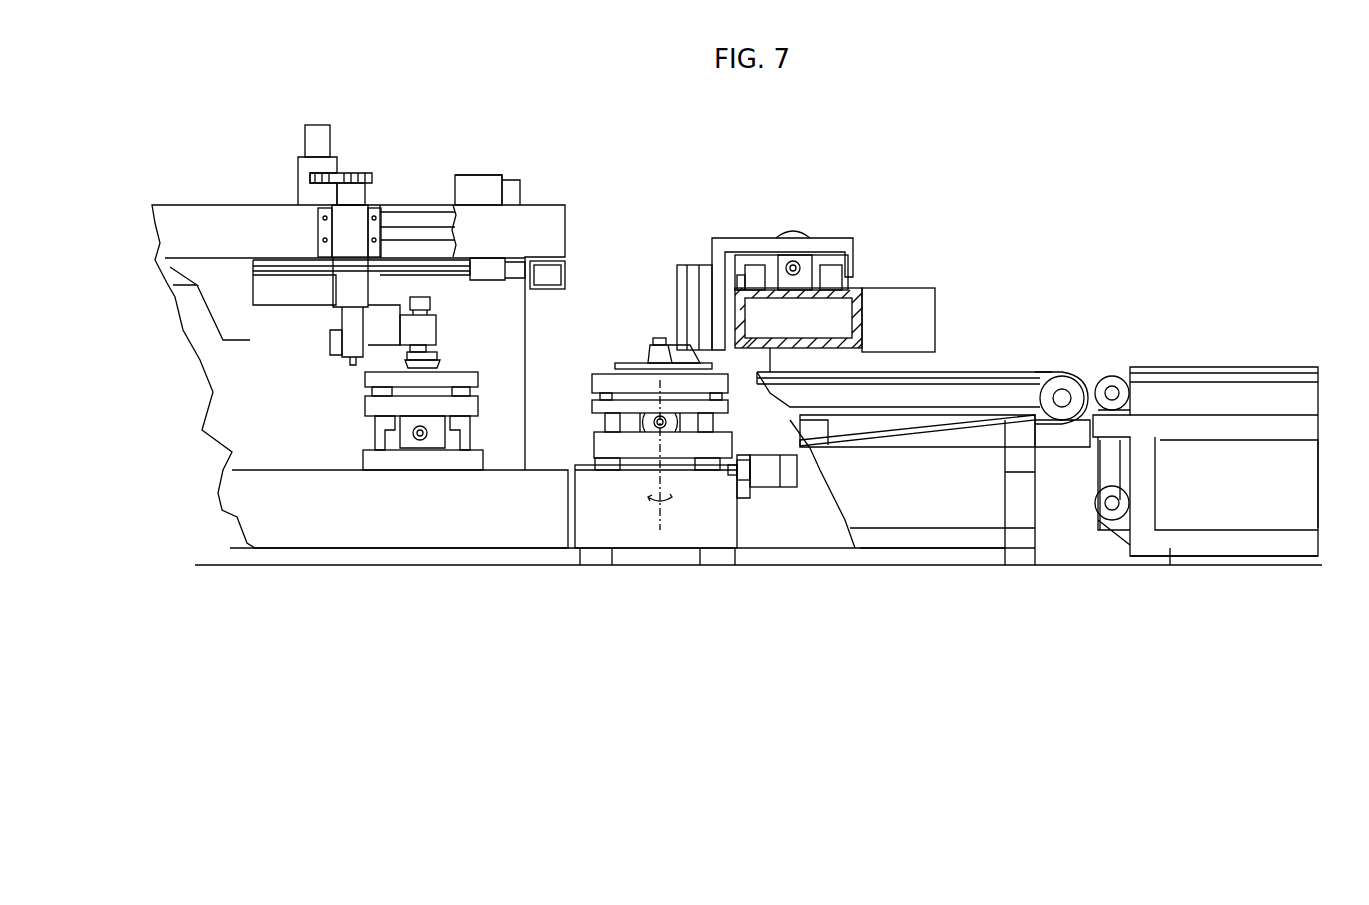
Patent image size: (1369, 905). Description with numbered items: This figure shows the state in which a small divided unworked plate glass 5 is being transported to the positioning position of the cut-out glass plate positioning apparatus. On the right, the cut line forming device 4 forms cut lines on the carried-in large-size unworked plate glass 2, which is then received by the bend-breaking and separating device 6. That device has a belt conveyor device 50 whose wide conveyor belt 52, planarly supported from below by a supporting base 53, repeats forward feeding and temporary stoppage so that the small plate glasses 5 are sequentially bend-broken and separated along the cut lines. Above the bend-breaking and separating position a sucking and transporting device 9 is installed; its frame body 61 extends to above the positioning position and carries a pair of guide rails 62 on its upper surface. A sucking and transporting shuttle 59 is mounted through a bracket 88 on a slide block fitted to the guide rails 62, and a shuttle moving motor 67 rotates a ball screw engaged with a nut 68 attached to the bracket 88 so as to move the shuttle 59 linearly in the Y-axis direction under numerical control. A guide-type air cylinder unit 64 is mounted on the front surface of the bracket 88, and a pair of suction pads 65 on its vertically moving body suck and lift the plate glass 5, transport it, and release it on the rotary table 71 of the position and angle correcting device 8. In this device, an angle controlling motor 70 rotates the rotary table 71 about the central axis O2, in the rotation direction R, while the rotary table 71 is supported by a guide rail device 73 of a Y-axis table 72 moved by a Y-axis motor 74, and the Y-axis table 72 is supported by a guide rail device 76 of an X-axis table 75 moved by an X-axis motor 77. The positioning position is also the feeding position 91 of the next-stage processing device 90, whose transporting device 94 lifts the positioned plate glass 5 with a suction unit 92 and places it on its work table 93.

The large-size unworked plate glass 2 is at (888, 372).
The cut line forming device 4 is at (1205, 364).
The small divided unworked plate glass 5 is at (630, 357).
The bend-breaking and separating device 6 is at (953, 383).
The position and angle correcting device 8 is at (650, 478).
The sucking and transporting device 9 is at (712, 235).
The belt conveyor device 50 is at (1010, 383).
The conveyor belt 52 is at (950, 430).
The supporting base 53 is at (897, 425).
The sucking and transporting shuttle 59 is at (700, 275).
The frame body 61 is at (813, 303).
The guide rail 62 is at (752, 273).
The guide-type air cylinder unit 64 is at (693, 330).
The suction pad 65 is at (655, 350).
The shuttle moving motor 67 is at (792, 230).
The nut 68 is at (803, 260).
The angle controlling motor 70 is at (706, 397).
The rotary table 71 is at (600, 387).
The Y-axis table 72 is at (722, 405).
The guide rail device 73 is at (612, 427).
The Y-axis motor 74 is at (670, 422).
The X-axis table 75 is at (607, 447).
The guide rail device 76 is at (640, 470).
The X-axis motor 77 is at (770, 472).
The bracket 88 is at (740, 245).
The processing device 90 is at (430, 205).
The feeding position 91 is at (622, 352).
The suction unit 92 is at (438, 358).
The work table 93 is at (380, 378).
The transporting device 94 is at (270, 325).
The rotation direction R is at (655, 530).
The central axis O2 is at (660, 512).